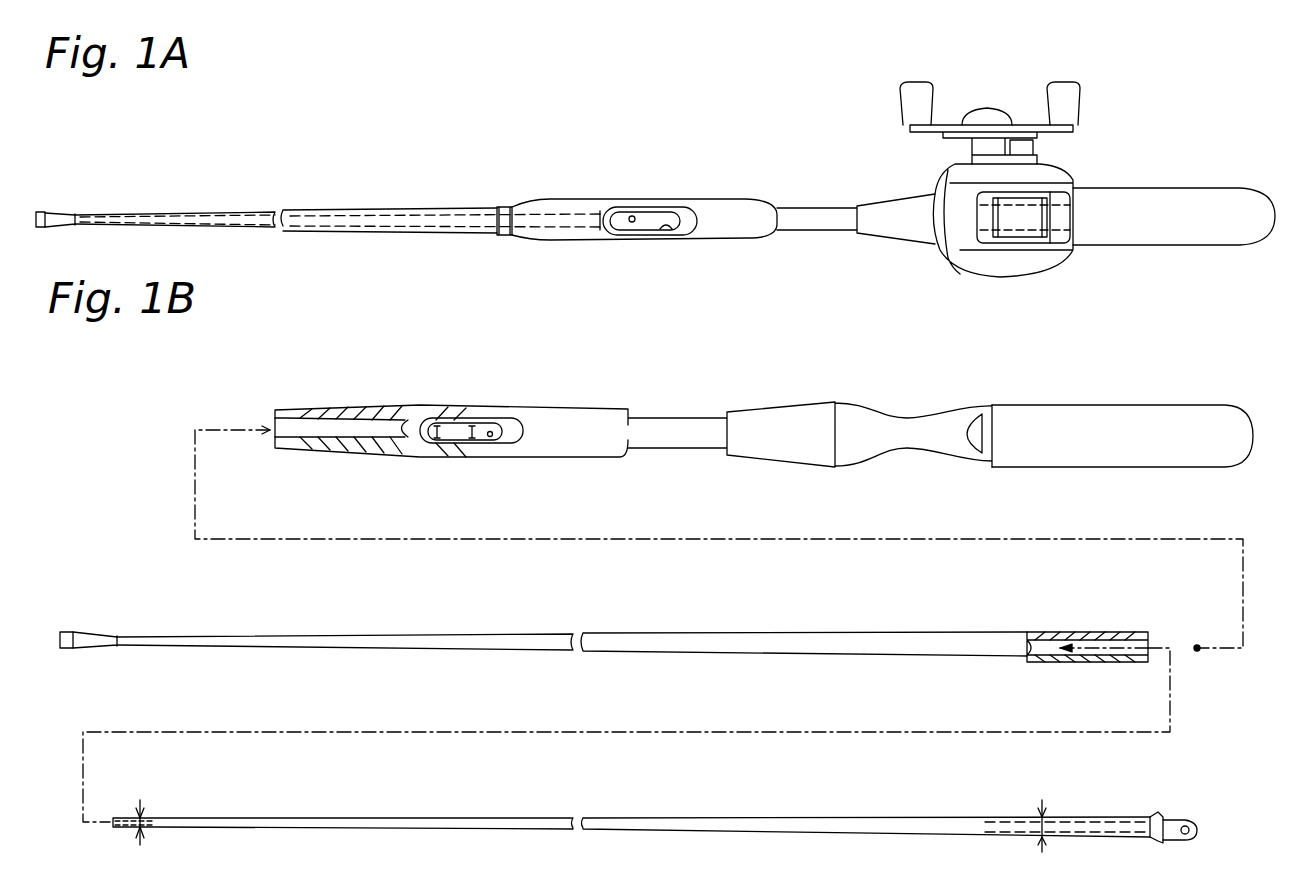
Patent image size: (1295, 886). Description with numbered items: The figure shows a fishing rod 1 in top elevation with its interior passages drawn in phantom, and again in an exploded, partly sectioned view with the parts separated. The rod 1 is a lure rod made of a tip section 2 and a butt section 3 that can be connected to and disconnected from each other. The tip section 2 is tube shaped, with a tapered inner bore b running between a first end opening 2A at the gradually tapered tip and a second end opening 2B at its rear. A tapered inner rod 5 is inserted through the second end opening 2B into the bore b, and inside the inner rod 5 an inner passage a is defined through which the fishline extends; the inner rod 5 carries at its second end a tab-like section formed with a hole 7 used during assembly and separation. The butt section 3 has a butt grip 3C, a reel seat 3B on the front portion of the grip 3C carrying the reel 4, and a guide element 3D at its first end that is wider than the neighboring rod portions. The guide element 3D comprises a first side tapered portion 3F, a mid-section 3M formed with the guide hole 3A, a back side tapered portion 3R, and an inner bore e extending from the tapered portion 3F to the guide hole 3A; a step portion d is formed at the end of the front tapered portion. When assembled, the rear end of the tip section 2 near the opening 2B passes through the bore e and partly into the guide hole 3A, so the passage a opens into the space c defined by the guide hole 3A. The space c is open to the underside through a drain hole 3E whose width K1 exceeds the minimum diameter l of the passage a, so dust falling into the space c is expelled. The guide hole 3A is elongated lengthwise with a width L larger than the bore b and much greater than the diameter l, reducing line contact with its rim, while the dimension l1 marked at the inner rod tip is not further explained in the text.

In FIG. 1A, the fishing rod 1 is at (287, 133).
In FIG. 1A, the tip section 2 is at (322, 208).
In FIG. 1B, the tip section 2 is at (797, 632).
In FIG. 1A, the first end opening 2A is at (37, 206).
In FIG. 1B, the first end opening 2A is at (58, 630).
In FIG. 1A, the second end opening 2B is at (608, 216).
In FIG. 1B, the second end opening 2B is at (1152, 638).
In FIG. 1A, the butt section 3 is at (770, 200).
In FIG. 1B, the butt section 3 is at (622, 420).
In FIG. 1A, the guide hole 3A is at (690, 212).
In FIG. 1B, the guide hole 3A is at (415, 418).
In FIG. 1A, the reel seat 3B is at (958, 240).
In FIG. 1B, the reel seat 3B is at (904, 416).
In FIG. 1A, the butt grip 3C is at (1160, 188).
In FIG. 1B, the butt grip 3C is at (1112, 425).
In FIG. 1A, the guide element 3D is at (668, 188).
In FIG. 1B, the guide element 3D is at (597, 460).
In FIG. 1A, the drain hole 3E is at (660, 230).
In FIG. 1B, the drain hole 3E is at (490, 438).
In FIG. 1A, the first side tapered portion 3F is at (556, 199).
In FIG. 1B, the first side tapered portion 3F is at (345, 405).
In FIG. 1A, the mid-section 3M is at (648, 204).
In FIG. 1B, the mid-section 3M is at (470, 416).
In FIG. 1A, the back side tapered portion 3R is at (763, 238).
In FIG. 1B, the back side tapered portion 3R is at (565, 410).
In FIG. 1A, the reel 4 is at (1058, 176).
In FIG. 1A, the inner rod 5 is at (378, 226).
In FIG. 1B, the inner rod 5 is at (793, 822).
In FIG. 1B, the hole 7 is at (1195, 818).
In FIG. 1A, the inner passage a is at (420, 224).
In FIG. 1B, the inner passage a is at (1160, 825).
In FIG. 1A, the inner bore b is at (450, 218).
In FIG. 1A, the space c is at (687, 228).
In FIG. 1B, the space c is at (510, 436).
In FIG. 1A, the step portion d is at (496, 207).
In FIG. 1B, the step portion d is at (283, 408).
In FIG. 1A, the inner bore e is at (552, 232).
In FIG. 1B, the inner bore e is at (352, 440).
In FIG. 1B, the width of the guide hole L is at (432, 440).
In FIG. 1B, the width of the drain hole K1 is at (480, 432).
In FIG. 1B, the inner diameter of the inner passage l is at (1048, 814).
In FIG. 1B, the length l1 is at (143, 812).